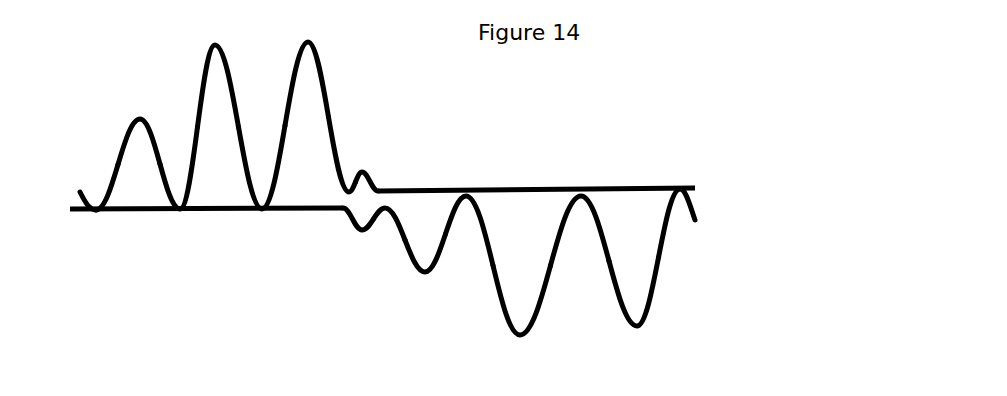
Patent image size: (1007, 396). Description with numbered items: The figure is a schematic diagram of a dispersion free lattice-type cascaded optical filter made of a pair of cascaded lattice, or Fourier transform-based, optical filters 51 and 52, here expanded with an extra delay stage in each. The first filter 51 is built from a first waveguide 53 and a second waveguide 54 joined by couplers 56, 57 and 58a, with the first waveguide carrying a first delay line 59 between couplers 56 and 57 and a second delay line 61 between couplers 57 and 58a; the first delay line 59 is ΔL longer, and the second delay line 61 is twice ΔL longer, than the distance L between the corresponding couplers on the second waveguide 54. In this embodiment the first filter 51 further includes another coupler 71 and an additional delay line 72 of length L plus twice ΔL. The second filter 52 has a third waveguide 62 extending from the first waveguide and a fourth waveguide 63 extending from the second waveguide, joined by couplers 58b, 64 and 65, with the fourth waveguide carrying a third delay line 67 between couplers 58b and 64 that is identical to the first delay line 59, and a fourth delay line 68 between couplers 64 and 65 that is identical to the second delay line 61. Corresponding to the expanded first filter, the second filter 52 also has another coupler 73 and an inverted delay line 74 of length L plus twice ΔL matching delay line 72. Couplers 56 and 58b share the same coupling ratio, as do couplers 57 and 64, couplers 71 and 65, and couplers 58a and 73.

The first filter 51 is at (229, 176).
The second filter 52 is at (534, 243).
The first waveguide 53 is at (88, 195).
The second waveguide 54 is at (137, 212).
The first coupler 56 is at (95, 212).
The second coupler 57 is at (183, 213).
The third coupler 58a is at (335, 235).
The fourth coupler 58b is at (383, 188).
The first delay line 59 is at (118, 136).
The second delay line 61 is at (205, 45).
The third waveguide 62 is at (688, 186).
The fourth waveguide 63 is at (695, 206).
The fifth coupler 64 is at (473, 190).
The sixth coupler 65 is at (587, 188).
The third delay line 67 is at (418, 280).
The fourth delay line 68 is at (545, 330).
The another coupler 71 is at (260, 213).
The additional delay line 72 is at (322, 56).
The another coupler 73 is at (678, 187).
The inverted delay line 74 is at (672, 263).